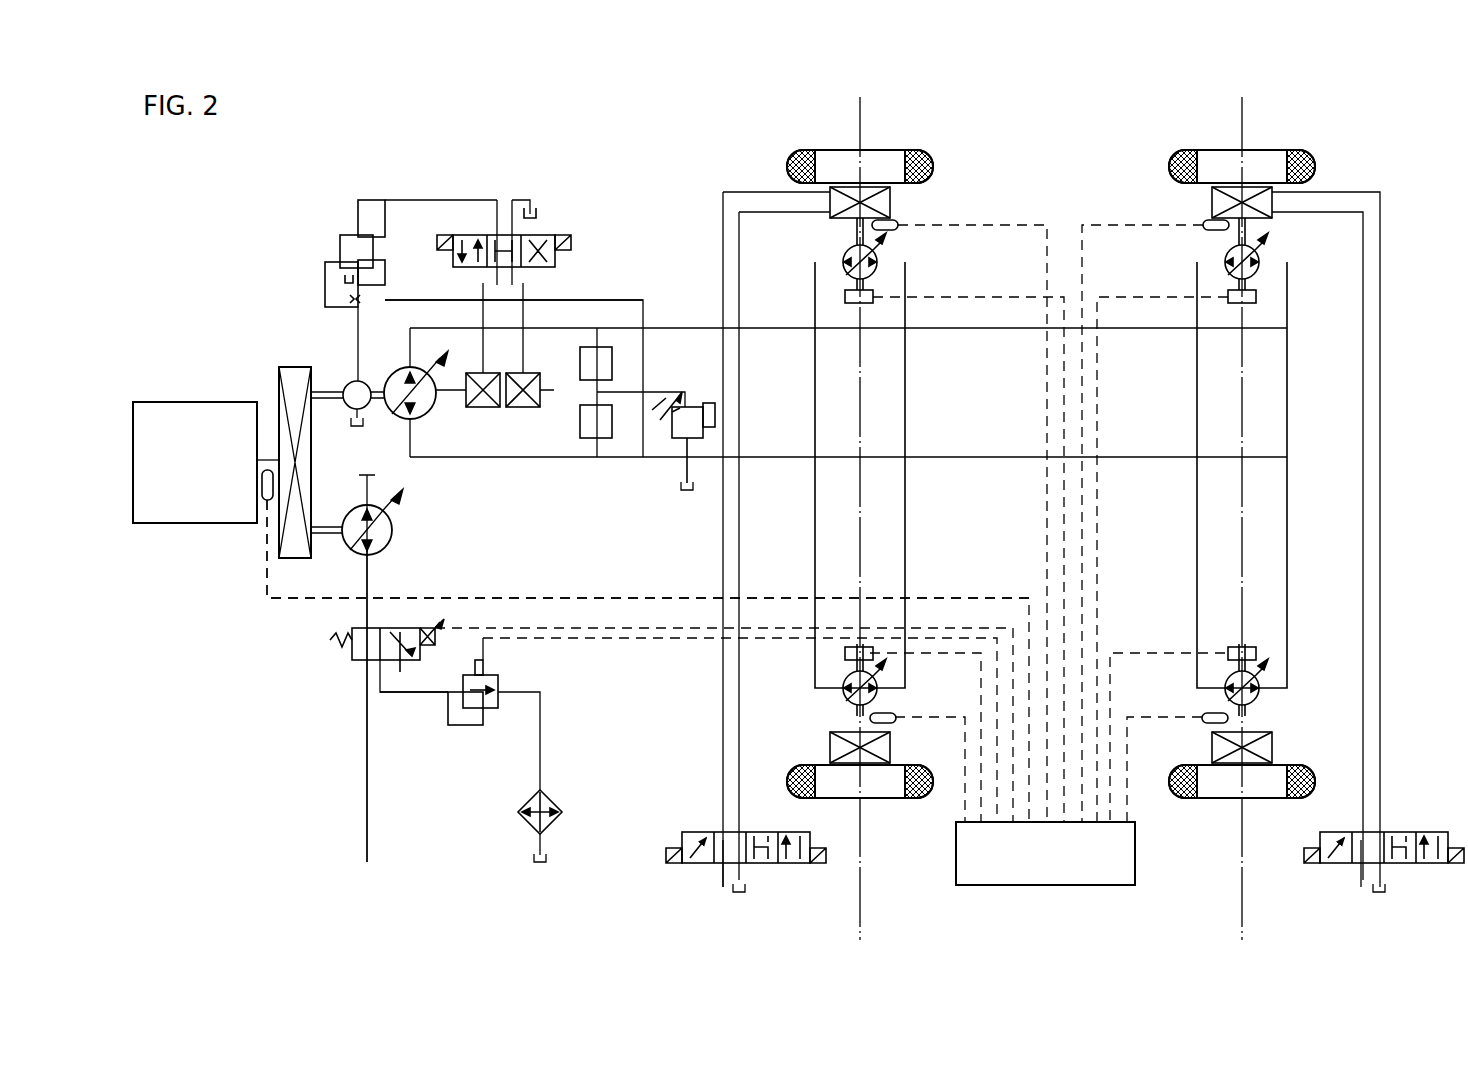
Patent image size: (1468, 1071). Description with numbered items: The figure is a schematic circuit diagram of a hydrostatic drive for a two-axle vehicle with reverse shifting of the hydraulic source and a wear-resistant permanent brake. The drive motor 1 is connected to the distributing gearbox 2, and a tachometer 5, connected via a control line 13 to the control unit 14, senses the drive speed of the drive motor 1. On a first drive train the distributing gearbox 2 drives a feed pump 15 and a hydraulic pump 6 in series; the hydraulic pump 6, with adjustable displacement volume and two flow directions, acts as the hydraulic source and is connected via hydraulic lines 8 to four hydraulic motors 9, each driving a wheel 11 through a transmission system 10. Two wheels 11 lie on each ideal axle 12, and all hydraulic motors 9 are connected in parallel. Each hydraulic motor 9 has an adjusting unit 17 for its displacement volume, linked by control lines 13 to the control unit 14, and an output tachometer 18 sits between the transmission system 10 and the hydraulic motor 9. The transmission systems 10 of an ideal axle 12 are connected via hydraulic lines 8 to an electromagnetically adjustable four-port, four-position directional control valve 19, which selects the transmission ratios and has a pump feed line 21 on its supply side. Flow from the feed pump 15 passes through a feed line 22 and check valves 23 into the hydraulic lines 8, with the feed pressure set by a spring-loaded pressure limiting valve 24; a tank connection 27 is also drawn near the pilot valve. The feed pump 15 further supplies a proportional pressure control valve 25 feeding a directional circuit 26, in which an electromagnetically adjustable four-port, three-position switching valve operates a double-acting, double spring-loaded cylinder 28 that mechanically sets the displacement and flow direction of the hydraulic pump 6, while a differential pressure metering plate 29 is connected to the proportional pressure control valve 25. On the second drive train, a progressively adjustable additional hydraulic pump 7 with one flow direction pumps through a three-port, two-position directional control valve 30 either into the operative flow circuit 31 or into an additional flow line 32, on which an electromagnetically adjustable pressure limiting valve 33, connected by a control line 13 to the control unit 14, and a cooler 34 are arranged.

The drive motor 1 is at (178, 410).
The distributing gearbox 2 is at (292, 372).
The tachometer 5 is at (266, 500).
The hydraulic pump 6 is at (400, 374).
The additional hydraulic pump 7 is at (388, 546).
The hydraulic lines 8 is at (995, 330).
The hydraulic motors 9 is at (847, 250).
The transmission system 10 is at (890, 208).
The wheel 11 is at (888, 795).
The ideal axle 12 is at (858, 128).
The control lines 13 is at (298, 605).
The control unit 14 is at (1090, 885).
The feed pump 15 is at (350, 383).
The adjusting unit 17 is at (845, 297).
The output tachometer 18 is at (893, 232).
The 4/4-port directional control valve 19 is at (688, 878).
The pump feed line 21 is at (722, 886).
The feed line 22 is at (440, 298).
The check valve 23 is at (582, 363).
The pressure limiting valve 24 is at (672, 435).
The proportional pressure control valve 25 is at (340, 232).
The directional circuit 26 is at (465, 192).
The tank connection 27 is at (545, 210).
The cylinder 28 is at (536, 366).
The differential pressure metering plate 29 is at (343, 299).
The 3/2-port directional control valve 30 is at (332, 660).
The operative flow circuit 31 is at (367, 755).
The additional flow line 32 is at (425, 702).
The electromagnetically adjustable pressure limiting valve 33 is at (492, 690).
The cooler 34 is at (550, 808).